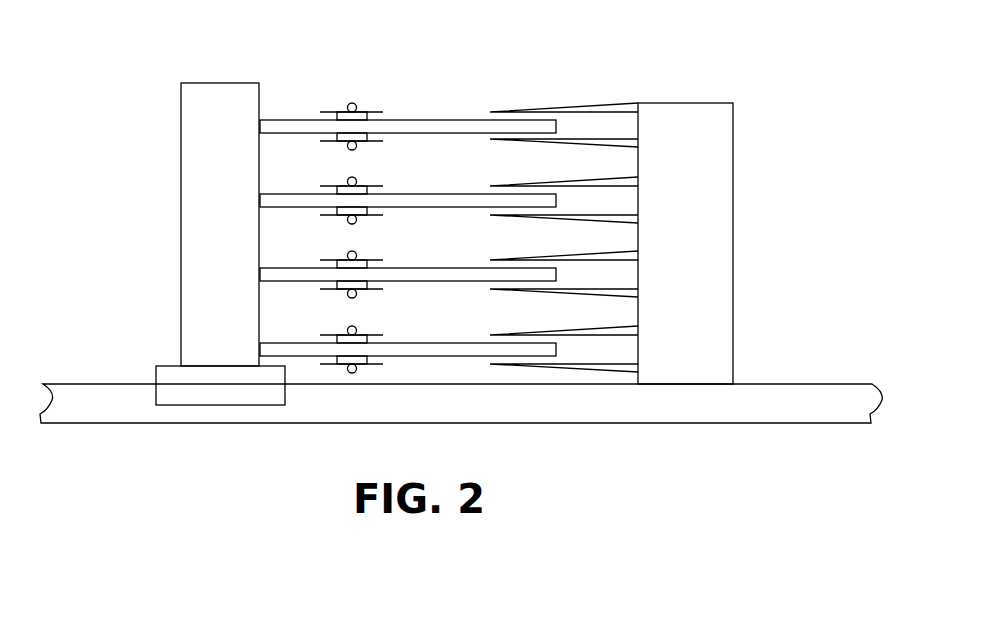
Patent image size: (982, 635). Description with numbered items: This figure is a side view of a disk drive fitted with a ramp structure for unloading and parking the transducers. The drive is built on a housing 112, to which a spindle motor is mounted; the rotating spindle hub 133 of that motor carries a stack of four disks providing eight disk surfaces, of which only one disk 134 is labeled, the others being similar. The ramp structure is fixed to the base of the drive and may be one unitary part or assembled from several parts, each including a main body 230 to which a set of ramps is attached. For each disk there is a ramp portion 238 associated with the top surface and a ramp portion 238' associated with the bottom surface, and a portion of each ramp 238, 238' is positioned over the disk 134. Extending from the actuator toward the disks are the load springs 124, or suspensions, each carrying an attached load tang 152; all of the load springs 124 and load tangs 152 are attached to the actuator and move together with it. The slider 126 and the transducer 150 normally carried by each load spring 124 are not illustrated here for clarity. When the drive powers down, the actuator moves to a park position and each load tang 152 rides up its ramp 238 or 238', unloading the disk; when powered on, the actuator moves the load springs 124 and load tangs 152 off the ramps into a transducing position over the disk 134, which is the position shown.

The housing 112 is at (789, 413).
The spindle hub 133 is at (172, 365).
The main body 230 is at (733, 165).
The disk 134 is at (449, 119).
The ramp portion 238 is at (587, 78).
The ramp portion 238' is at (557, 161).
The magnetic transducer 150 is at (352, 70).
The load tang 152 is at (354, 103).
The slider 126 is at (363, 112).
The load spring 124 is at (372, 141).